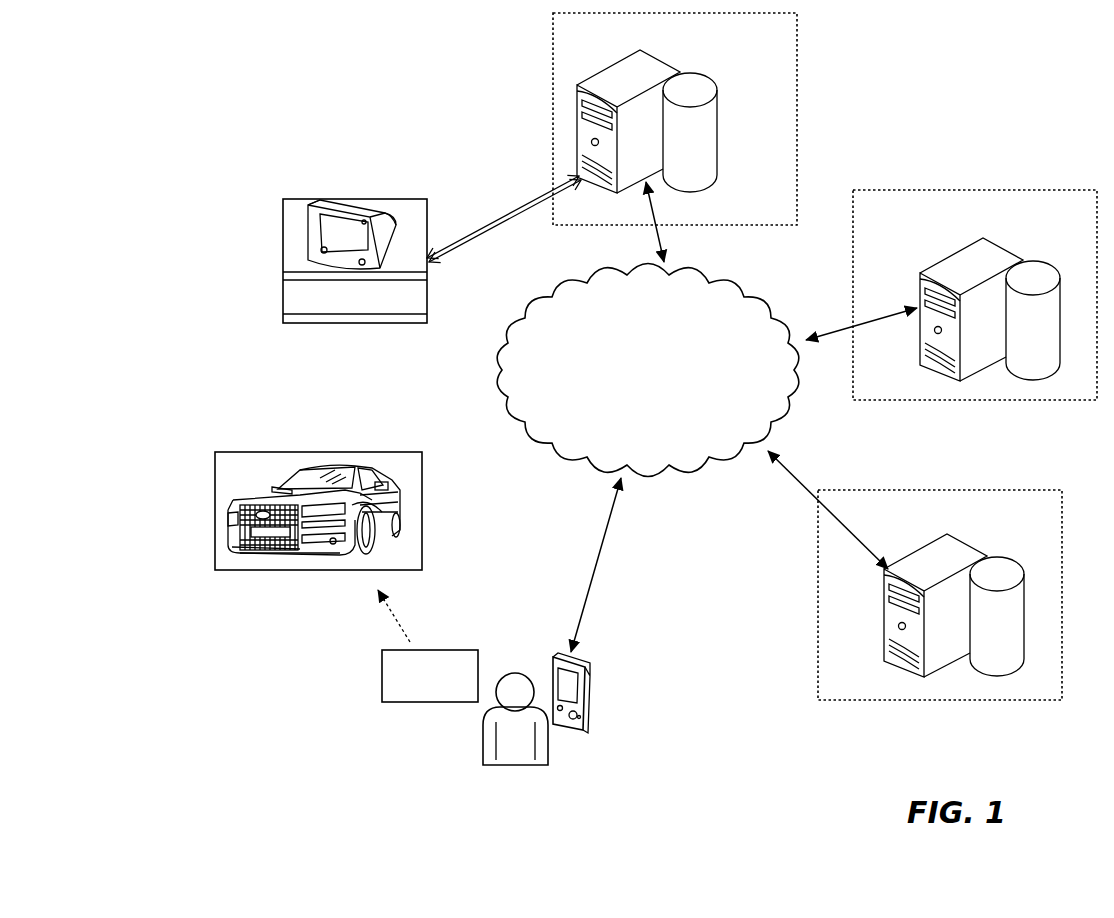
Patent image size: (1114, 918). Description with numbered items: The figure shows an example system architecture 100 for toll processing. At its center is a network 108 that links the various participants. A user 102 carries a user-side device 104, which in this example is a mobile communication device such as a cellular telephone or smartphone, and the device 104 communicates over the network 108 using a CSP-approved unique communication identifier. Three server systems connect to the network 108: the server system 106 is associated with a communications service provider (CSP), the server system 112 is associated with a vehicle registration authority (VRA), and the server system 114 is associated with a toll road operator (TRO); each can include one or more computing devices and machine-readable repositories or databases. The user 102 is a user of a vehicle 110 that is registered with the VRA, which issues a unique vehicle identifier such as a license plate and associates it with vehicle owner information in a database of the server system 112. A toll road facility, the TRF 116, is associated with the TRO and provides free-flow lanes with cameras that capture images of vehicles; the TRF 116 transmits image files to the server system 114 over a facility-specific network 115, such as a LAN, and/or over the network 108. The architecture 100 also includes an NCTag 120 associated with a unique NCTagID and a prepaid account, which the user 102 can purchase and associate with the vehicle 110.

The system architecture 100 is at (120, 64).
The user 102 is at (508, 764).
The user-side device 104 is at (586, 674).
The server system 106 is at (964, 538).
The network 108 is at (770, 301).
The vehicle 110 is at (214, 463).
The server system 112 is at (984, 240).
The server system 114 is at (607, 67).
The facility-specific network 115 is at (517, 209).
The TRF 116 is at (283, 199).
The NCTag 120 is at (382, 675).